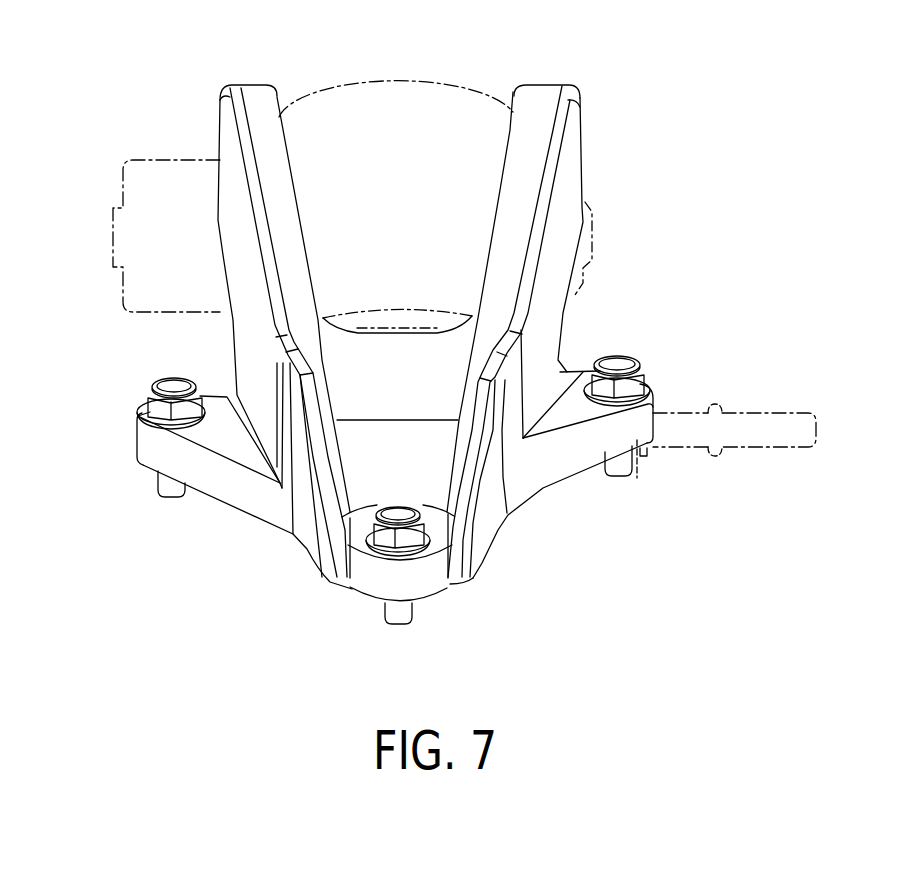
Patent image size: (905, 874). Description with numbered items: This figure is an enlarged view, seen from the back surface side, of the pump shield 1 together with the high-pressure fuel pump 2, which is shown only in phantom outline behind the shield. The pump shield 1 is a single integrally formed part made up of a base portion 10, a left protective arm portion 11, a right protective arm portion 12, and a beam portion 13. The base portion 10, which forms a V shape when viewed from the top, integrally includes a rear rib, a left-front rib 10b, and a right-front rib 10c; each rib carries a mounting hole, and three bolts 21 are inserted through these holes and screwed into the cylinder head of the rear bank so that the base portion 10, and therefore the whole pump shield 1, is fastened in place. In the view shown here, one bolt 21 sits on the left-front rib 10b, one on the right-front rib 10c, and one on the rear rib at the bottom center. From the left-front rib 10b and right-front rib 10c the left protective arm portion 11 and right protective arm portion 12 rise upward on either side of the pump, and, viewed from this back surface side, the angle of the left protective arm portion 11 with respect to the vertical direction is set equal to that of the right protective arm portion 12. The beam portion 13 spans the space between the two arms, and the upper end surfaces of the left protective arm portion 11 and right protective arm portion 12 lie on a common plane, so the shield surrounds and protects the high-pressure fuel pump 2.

The pump shield 1 is at (423, 337).
The high-pressure fuel pump 2 is at (405, 87).
The base portion 10 is at (441, 579).
The left-front rib 10b is at (137, 437).
The right-front rib 10c is at (657, 397).
The left protective arm portion 11 is at (228, 90).
The right protective arm portion 12 is at (583, 163).
The beam portion 13 is at (393, 330).
The bolt 21 is at (147, 381).